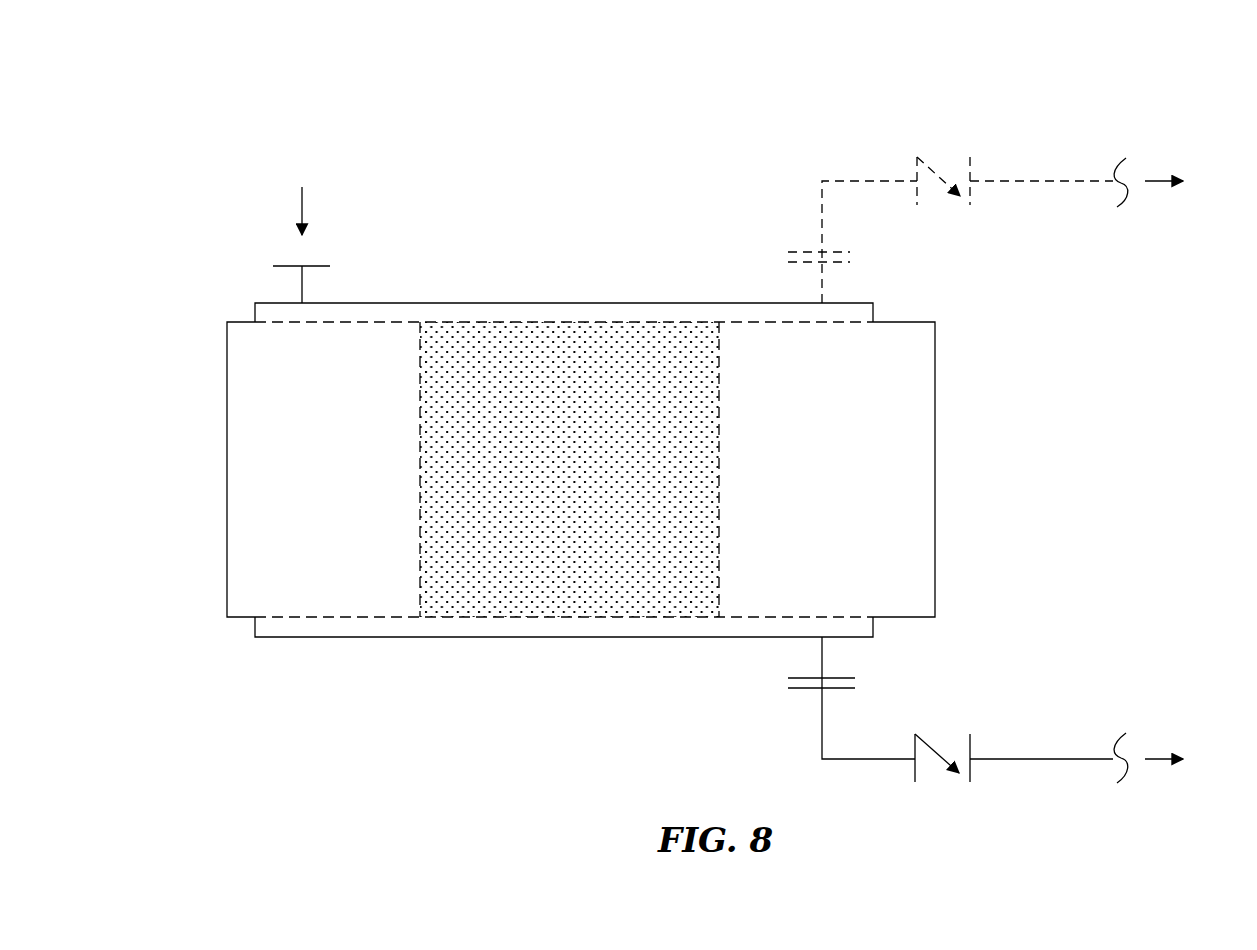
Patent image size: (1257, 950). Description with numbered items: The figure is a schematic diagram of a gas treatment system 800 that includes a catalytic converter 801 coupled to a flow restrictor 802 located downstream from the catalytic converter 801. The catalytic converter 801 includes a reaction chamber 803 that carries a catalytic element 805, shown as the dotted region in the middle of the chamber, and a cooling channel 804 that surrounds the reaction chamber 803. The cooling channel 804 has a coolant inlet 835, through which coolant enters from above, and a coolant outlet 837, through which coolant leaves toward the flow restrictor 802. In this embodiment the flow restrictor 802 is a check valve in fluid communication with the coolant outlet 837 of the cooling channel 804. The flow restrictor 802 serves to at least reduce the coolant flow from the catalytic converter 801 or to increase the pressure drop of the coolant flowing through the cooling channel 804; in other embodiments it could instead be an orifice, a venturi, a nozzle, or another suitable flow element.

The gas treatment system 800 is at (1104, 98).
The catalytic converter 801 is at (231, 305).
The flow restrictor 802 is at (970, 160).
The reaction chamber 803 is at (935, 495).
The cooling channel 804 is at (473, 303).
The catalytic element 805 is at (719, 468).
The coolant inlet 835 is at (322, 266).
The coolant outlet 837 is at (852, 252).